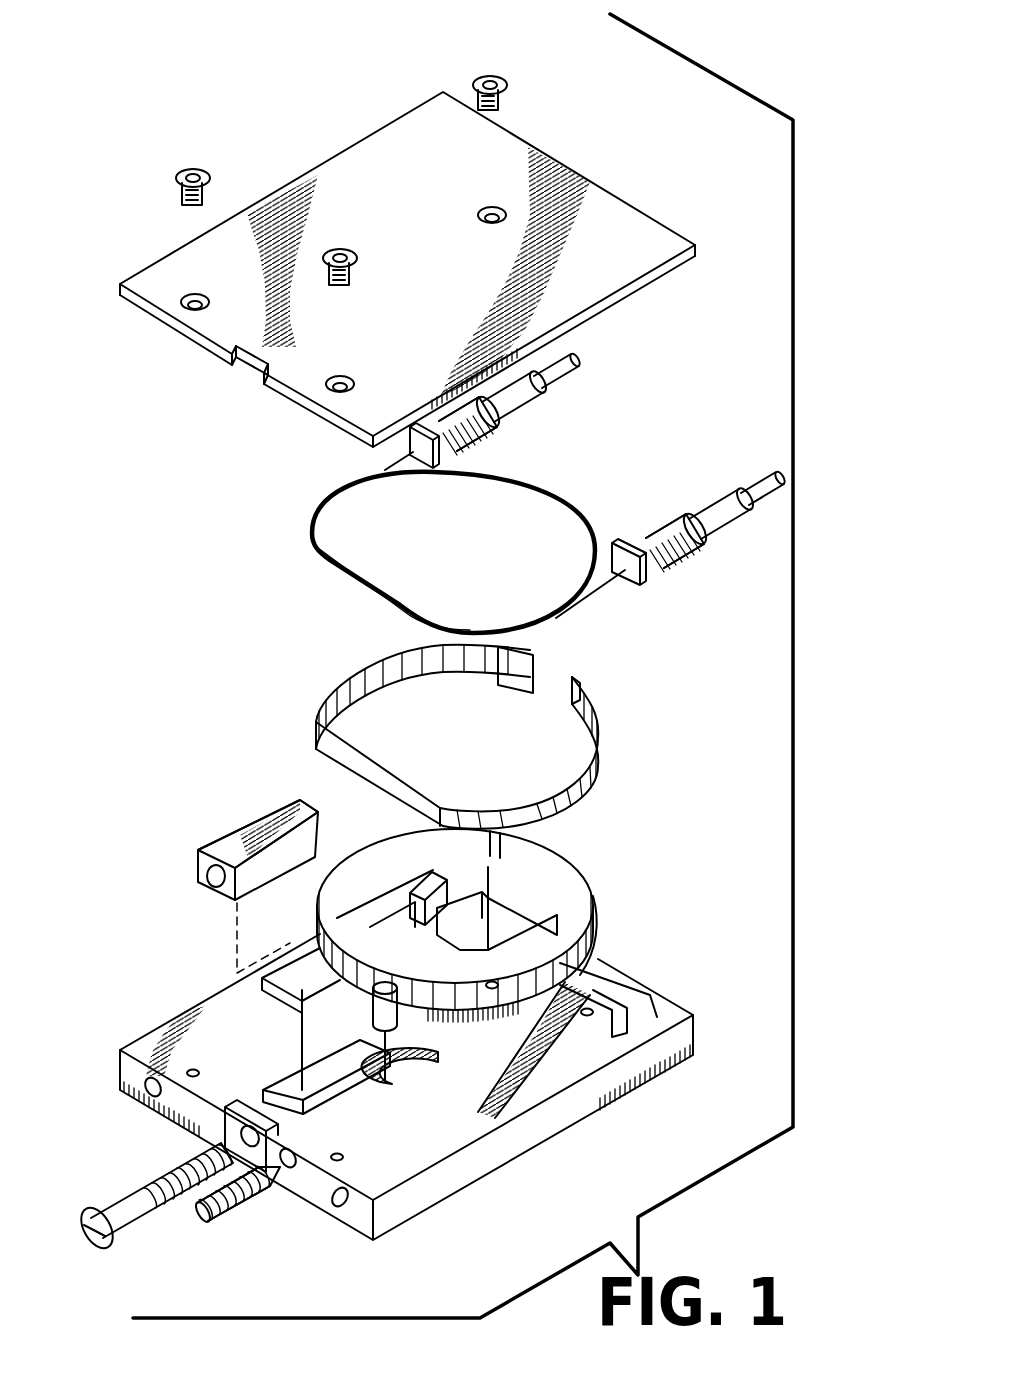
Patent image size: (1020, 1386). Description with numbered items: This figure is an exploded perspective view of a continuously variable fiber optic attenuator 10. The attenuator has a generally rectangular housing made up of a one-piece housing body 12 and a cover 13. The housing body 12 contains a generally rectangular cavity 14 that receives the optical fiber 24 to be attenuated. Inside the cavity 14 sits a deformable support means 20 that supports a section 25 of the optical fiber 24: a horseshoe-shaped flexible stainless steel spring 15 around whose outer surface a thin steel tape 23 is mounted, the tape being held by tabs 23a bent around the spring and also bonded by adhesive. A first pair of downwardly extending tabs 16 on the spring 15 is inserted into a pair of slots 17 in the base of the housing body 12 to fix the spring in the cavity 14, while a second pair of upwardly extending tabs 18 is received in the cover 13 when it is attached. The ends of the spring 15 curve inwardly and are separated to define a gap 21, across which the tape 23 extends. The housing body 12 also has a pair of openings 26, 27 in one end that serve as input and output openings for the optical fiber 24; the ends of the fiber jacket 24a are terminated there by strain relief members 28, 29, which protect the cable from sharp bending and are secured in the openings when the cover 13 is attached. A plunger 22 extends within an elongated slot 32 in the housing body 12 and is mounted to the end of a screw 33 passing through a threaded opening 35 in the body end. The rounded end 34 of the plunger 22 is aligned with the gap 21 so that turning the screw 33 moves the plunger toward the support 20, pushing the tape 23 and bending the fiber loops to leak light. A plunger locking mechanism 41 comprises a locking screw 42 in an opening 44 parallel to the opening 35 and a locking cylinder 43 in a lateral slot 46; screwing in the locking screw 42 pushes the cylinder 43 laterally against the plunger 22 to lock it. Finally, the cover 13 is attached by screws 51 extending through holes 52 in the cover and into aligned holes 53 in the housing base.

The fiber optic attenuator 10 is at (141, 46).
The housing body 12 is at (665, 1072).
The cover 13 is at (610, 210).
The cavity 14 is at (552, 1058).
The horseshoe-shaped spring 15 is at (545, 850).
The downwardly extending tabs 16 is at (590, 918).
The slots 17 is at (588, 1009).
The upwardly extending tabs 18 is at (592, 880).
The support means 20 is at (650, 820).
The gap 21 is at (388, 975).
The plunger 22 is at (220, 850).
The steel tape 23 is at (330, 683).
The tabs 23a is at (588, 726).
The optical fiber 24 is at (612, 586).
The exterior jacket 24a is at (752, 487).
The section of optical fiber 25 is at (315, 488).
The opening 26 is at (660, 1007).
The opening 27 is at (440, 895).
The strain relief member 28 is at (730, 500).
The strain relief member 29 is at (507, 405).
The elongated slot 32 is at (290, 1088).
The screw 33 is at (163, 1177).
The plunger end 34 is at (255, 803).
The threaded opening 35 is at (230, 1128).
The plunger locking mechanism 41 is at (260, 1210).
The locking screw 42 is at (232, 1207).
The locking cylinder 43 is at (393, 1018).
The opening 44 is at (281, 1147).
The lateral slot 46 is at (388, 1036).
The screws 51 is at (498, 77).
The holes 52 is at (193, 300).
The holes 53 is at (490, 983).